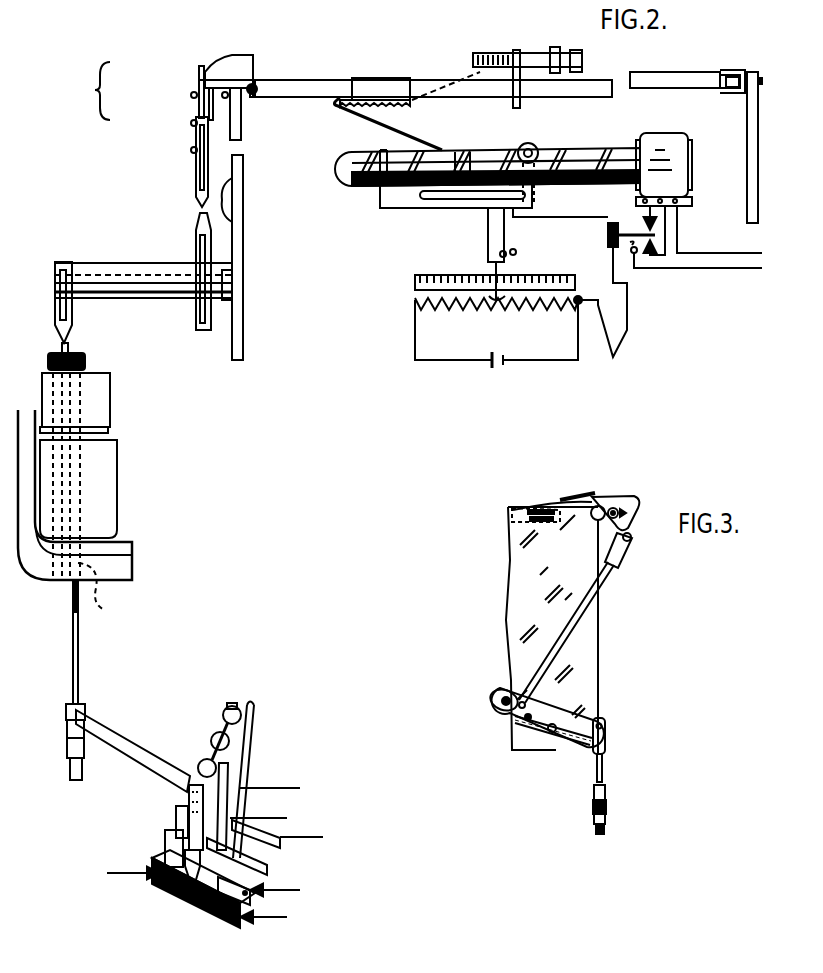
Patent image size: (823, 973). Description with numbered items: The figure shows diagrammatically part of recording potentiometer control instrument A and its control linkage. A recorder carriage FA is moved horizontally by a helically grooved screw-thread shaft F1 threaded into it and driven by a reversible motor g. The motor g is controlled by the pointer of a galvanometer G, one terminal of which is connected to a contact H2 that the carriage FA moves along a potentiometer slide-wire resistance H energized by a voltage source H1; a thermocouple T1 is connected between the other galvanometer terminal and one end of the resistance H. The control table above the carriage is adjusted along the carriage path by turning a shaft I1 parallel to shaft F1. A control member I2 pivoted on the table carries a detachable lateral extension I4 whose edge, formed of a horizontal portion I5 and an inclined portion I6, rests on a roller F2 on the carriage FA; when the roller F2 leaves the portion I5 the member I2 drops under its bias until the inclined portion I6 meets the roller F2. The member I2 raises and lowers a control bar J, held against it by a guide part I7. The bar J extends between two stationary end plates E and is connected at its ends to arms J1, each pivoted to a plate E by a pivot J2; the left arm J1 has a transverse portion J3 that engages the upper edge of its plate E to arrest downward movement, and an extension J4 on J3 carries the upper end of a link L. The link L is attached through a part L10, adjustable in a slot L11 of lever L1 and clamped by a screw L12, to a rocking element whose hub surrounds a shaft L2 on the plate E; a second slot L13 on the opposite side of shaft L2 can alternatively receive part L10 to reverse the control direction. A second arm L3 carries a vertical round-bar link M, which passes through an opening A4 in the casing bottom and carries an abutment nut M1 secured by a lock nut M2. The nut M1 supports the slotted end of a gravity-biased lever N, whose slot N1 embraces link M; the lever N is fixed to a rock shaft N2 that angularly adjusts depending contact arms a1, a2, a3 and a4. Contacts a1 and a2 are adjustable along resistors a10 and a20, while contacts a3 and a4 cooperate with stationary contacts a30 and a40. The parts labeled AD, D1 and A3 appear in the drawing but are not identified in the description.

In FIG. 2, the recording potentiometer control instrument A is at (95, 91).
In FIG. 2, the control bar J is at (302, 98).
In FIG. 3, the control bar J is at (518, 510).
In FIG. 2, the arm J1 is at (253, 66).
In FIG. 3, the arm J1 is at (563, 505).
In FIG. 2, the pivot J2 is at (243, 100).
In FIG. 3, the pivot J2 is at (609, 505).
In FIG. 2, the transverse portion J3 is at (199, 72).
In FIG. 3, the transverse portion J3 is at (582, 495).
In FIG. 2, the extension J4 is at (197, 107).
In FIG. 3, the extension J4 is at (638, 514).
In FIG. 2, the link L is at (198, 200).
In FIG. 3, the link L is at (604, 575).
In FIG. 3, the arm of rocking element L1 is at (512, 740).
In FIG. 2, the shaft L2 is at (130, 272).
In FIG. 3, the shaft L2 is at (545, 752).
In FIG. 2, the second arm L3 is at (66, 262).
In FIG. 3, the second arm L3 is at (599, 716).
In FIG. 3, the adjustable part L10 is at (512, 690).
In FIG. 3, the slot L11 is at (500, 706).
In FIG. 3, the screw L12 is at (514, 714).
In FIG. 3, the slot L13 is at (565, 752).
In FIG. 2, the end plate E is at (243, 322).
In FIG. 3, the end plate E is at (508, 588).
In FIG. 2, the shaft I1 is at (486, 53).
In FIG. 2, the control member I2 is at (340, 98).
In FIG. 2, the lateral extension I4 is at (378, 80).
In FIG. 2, the horizontal portion I5 is at (474, 152).
In FIG. 2, the inclined portion I6 is at (385, 124).
In FIG. 2, the guide part I7 is at (392, 78).
In FIG. 2, the screw thread shaft F1 is at (345, 181).
In FIG. 2, the roller part F2 is at (533, 146).
In FIG. 2, the recorder carriage FA is at (378, 200).
In FIG. 2, the reversible motor g is at (660, 150).
In FIG. 2, the galvanometer G is at (614, 224).
In FIG. 2, the potentiometer slide wire resistance H is at (425, 290).
In FIG. 2, the voltage source H1 is at (498, 370).
In FIG. 2, the contact H2 is at (482, 288).
In FIG. 2, the thermocouple T1 is at (625, 322).
In FIG. 2, the link M is at (62, 350).
In FIG. 3, the link M is at (604, 766).
In FIG. 2, the nut M1 is at (67, 736).
In FIG. 3, the nut M1 is at (596, 816).
In FIG. 2, the lock nut M2 is at (70, 763).
In FIG. 3, the lock nut M2 is at (598, 830).
In FIG. 2, the adjusting nut AD is at (85, 360).
In FIG. 2, the housing D1 is at (110, 400).
In FIG. 2, the cylinder A3 is at (117, 482).
In FIG. 2, the opening A4 is at (102, 590).
In FIG. 2, the actuating element N is at (125, 742).
In FIG. 3, the actuating element N is at (596, 806).
In FIG. 2, the slot N1 is at (85, 708).
In FIG. 3, the slot N1 is at (606, 792).
In FIG. 2, the rock shaft N2 is at (223, 712).
In FIG. 2, the contact arm a1 is at (189, 802).
In FIG. 2, the contact arm a2 is at (203, 772).
In FIG. 2, the contact arm a3 is at (245, 773).
In FIG. 2, the contact arm a4 is at (250, 716).
In FIG. 2, the resistor a10 is at (190, 886).
In FIG. 2, the resistor a20 is at (168, 845).
In FIG. 2, the stationary contact a30 is at (178, 814).
In FIG. 2, the stationary contact a40 is at (265, 843).